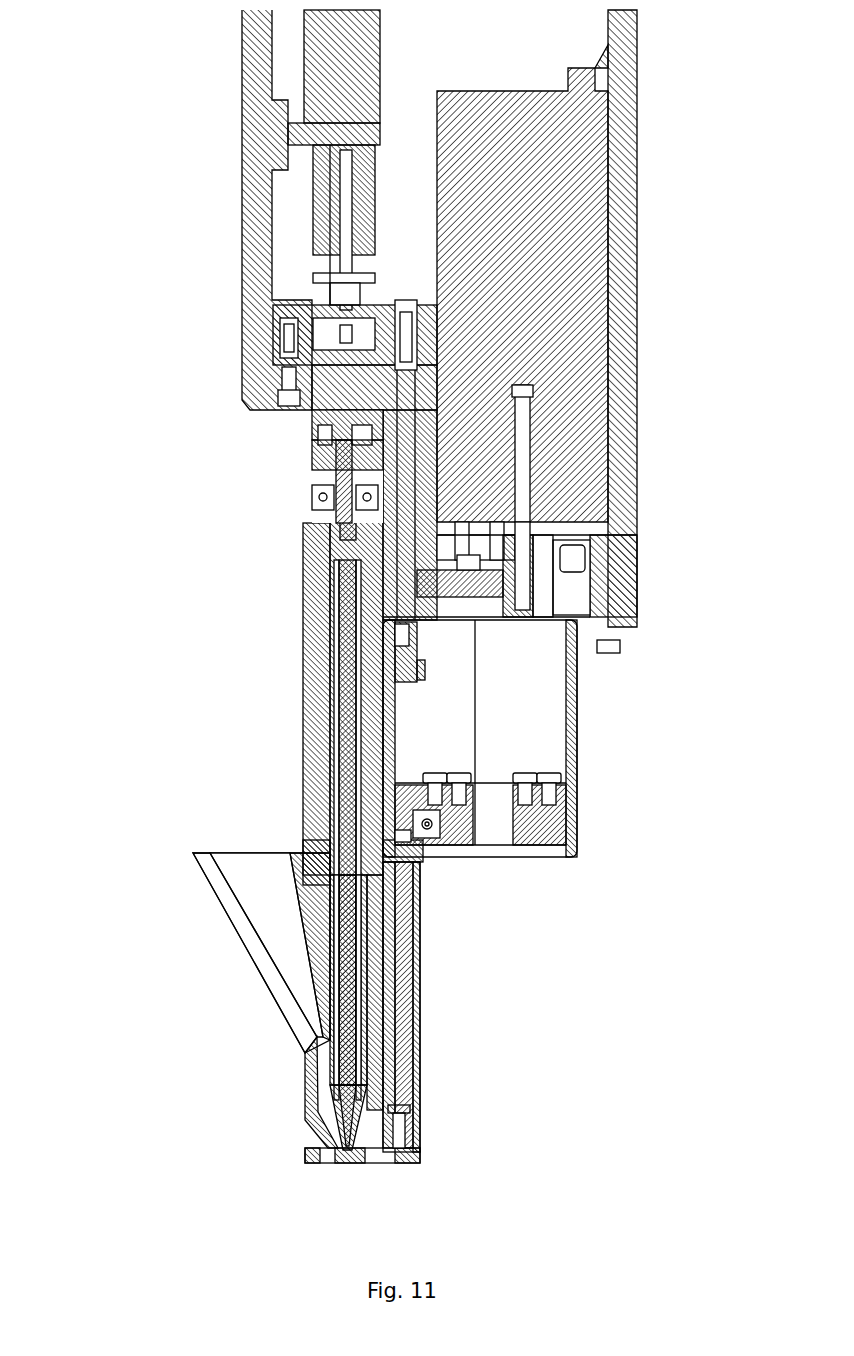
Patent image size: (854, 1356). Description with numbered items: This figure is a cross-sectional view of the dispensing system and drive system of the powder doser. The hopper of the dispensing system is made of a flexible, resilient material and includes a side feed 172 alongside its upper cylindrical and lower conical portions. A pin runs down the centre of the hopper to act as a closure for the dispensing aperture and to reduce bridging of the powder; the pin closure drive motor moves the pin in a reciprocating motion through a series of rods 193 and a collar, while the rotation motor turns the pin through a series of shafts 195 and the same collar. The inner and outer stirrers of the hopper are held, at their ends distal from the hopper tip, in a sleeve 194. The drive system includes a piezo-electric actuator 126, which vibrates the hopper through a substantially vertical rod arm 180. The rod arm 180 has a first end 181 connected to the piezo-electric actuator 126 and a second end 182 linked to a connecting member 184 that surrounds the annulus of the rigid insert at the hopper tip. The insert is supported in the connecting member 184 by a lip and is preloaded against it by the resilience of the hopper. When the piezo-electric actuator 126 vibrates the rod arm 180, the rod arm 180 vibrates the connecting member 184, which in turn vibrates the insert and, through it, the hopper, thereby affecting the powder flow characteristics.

The piezo-electric actuator 126 is at (405, 723).
The side feed 172 is at (225, 918).
The rod arm 180 is at (397, 937).
The first end 181 is at (400, 830).
The second end 182 is at (398, 1078).
The connecting member 184 is at (370, 1163).
The rods 193 is at (407, 370).
The sleeve 194 is at (315, 850).
The shafts 195 is at (320, 268).